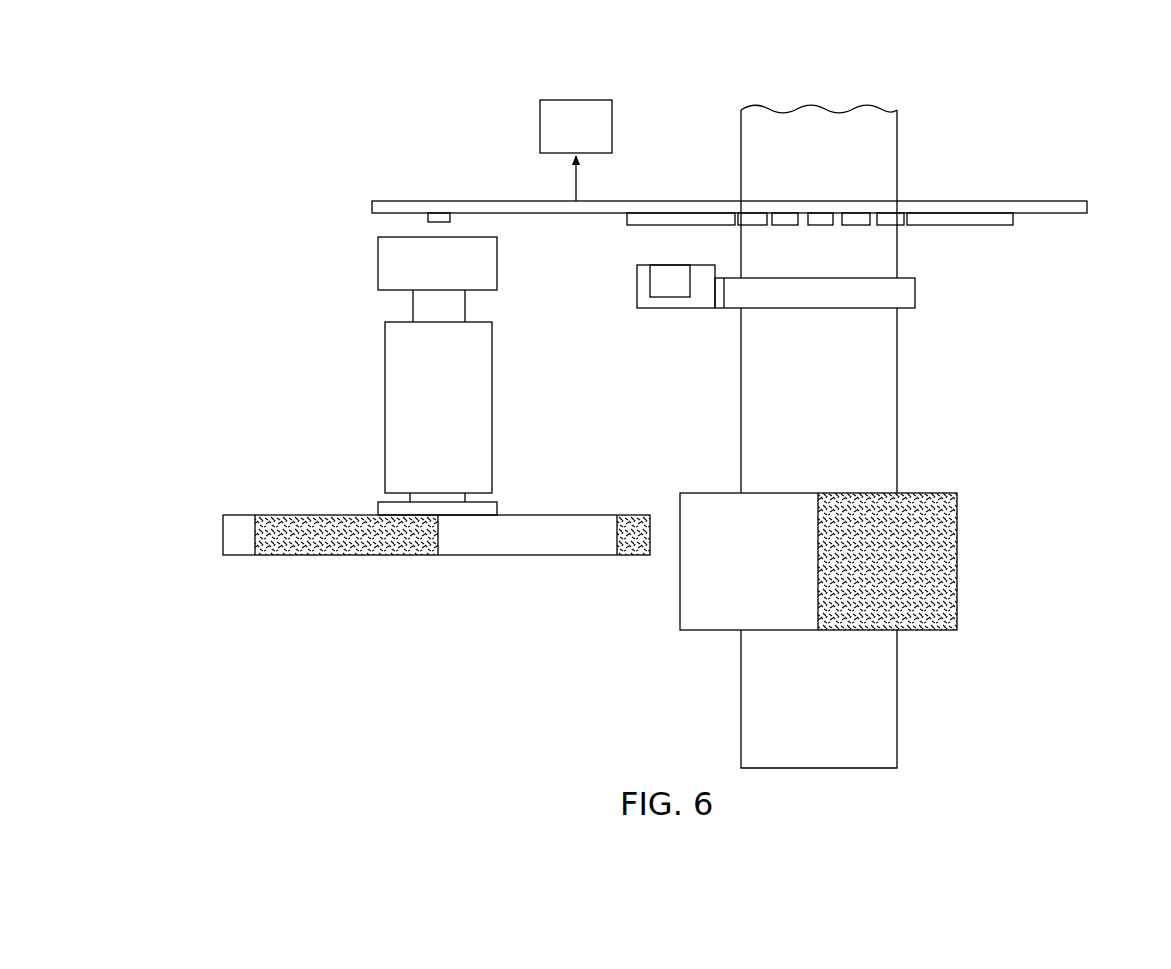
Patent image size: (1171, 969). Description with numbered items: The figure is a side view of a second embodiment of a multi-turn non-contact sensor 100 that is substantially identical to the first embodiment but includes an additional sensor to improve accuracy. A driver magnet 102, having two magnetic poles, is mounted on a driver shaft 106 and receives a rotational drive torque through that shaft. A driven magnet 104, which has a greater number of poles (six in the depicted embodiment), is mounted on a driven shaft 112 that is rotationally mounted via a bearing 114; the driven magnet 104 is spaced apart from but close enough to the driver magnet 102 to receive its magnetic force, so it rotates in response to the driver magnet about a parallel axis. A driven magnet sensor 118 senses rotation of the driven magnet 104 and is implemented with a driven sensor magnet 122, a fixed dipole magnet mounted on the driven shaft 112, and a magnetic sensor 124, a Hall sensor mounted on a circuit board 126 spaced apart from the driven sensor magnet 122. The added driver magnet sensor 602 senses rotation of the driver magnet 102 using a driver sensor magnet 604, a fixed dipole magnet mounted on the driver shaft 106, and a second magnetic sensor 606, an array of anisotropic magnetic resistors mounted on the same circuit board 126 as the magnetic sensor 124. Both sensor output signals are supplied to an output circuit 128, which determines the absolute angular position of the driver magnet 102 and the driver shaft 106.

The multi-turn non-contact sensor 100 is at (273, 181).
The driver magnet 102 is at (957, 565).
The driven magnet 104 is at (223, 530).
The driver shaft 106 is at (897, 400).
The driven shaft 112 is at (413, 303).
The bearing 114 is at (385, 400).
The driven magnet sensor 118 is at (327, 200).
The driven sensor magnet 122 is at (378, 265).
The magnetic sensor 124 is at (428, 218).
The circuit board 126 is at (420, 201).
The output circuit 128 is at (613, 127).
The driver magnet sensor 602 is at (1088, 205).
The driver sensor magnet 604 is at (665, 297).
The second magnetic sensor 606 is at (620, 223).